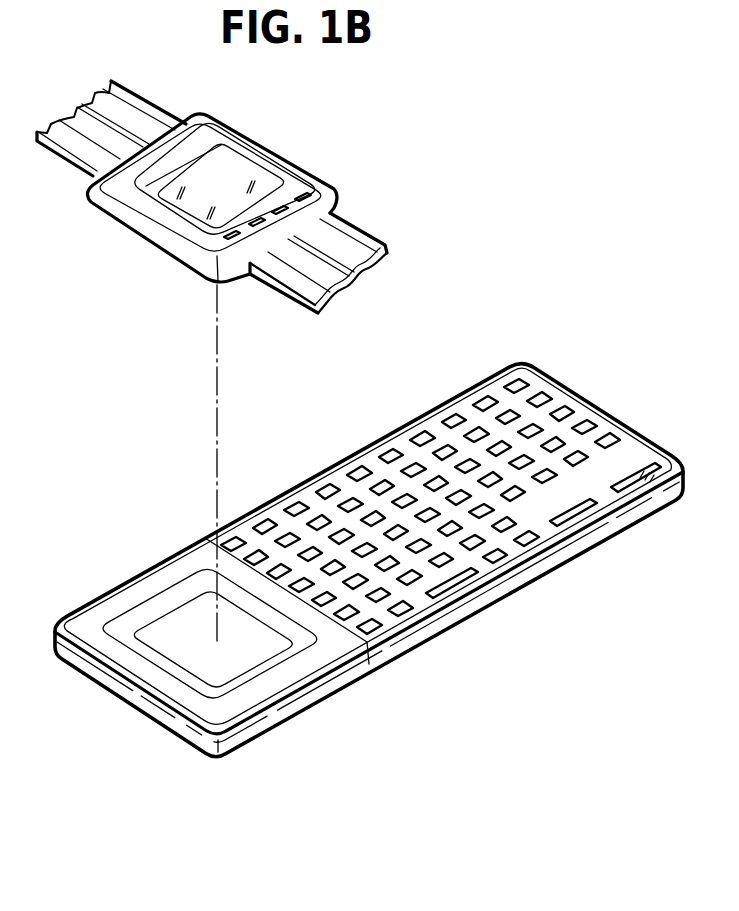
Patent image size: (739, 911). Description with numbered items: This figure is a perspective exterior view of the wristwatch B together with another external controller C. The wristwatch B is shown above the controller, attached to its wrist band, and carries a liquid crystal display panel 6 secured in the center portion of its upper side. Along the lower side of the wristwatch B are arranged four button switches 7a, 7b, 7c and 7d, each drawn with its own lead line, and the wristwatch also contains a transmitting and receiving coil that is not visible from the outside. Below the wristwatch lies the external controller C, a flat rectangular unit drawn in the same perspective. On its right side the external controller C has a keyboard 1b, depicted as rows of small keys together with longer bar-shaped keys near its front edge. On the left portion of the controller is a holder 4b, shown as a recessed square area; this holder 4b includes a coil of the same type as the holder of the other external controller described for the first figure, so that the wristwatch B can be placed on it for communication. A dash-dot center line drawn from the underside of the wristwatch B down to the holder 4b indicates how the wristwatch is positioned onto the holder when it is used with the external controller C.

The wristwatch B is at (241, 247).
The external controller C is at (369, 533).
The liquid crystal display panel 6 is at (220, 190).
The button switch 7a is at (259, 227).
The button switch 7b is at (282, 213).
The button switch 7c is at (312, 198).
The button switch 7d is at (236, 242).
The keyboard 1b is at (510, 552).
The holder 4b is at (215, 664).